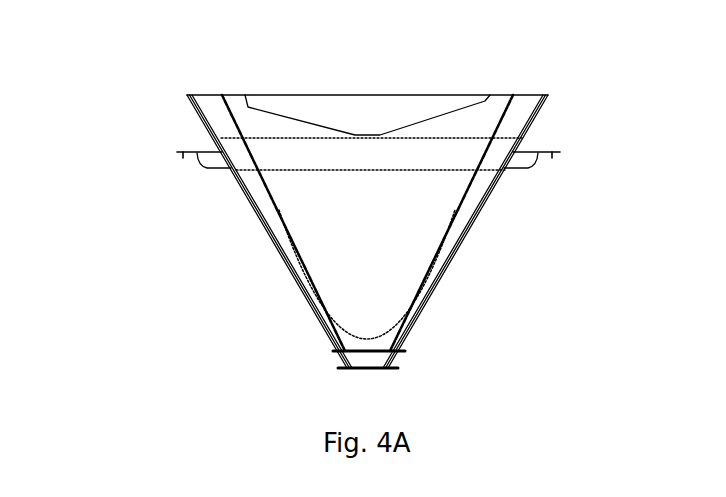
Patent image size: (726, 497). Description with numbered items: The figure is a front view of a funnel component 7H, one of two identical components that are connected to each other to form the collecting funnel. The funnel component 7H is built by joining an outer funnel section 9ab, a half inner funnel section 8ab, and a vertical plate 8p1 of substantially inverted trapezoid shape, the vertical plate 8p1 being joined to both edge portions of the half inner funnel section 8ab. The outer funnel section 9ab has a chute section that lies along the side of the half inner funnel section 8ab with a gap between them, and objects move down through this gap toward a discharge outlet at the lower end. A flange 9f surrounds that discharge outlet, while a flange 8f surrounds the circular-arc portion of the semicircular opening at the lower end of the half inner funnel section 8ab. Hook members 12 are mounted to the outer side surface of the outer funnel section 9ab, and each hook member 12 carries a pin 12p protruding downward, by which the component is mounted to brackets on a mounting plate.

The funnel component 7H is at (419, 188).
The half inner funnel section 8ab is at (408, 95).
The vertical plate 8p1 is at (317, 125).
The outer funnel section 9ab is at (538, 113).
The flange 8f is at (362, 353).
The flange 9f is at (375, 369).
The hook members 12 is at (199, 151).
The pins 12p is at (183, 158).